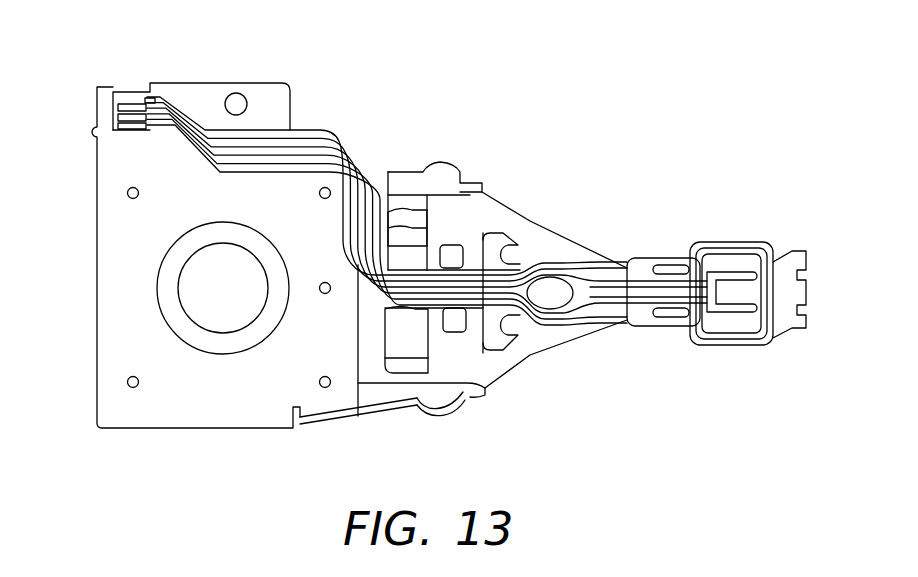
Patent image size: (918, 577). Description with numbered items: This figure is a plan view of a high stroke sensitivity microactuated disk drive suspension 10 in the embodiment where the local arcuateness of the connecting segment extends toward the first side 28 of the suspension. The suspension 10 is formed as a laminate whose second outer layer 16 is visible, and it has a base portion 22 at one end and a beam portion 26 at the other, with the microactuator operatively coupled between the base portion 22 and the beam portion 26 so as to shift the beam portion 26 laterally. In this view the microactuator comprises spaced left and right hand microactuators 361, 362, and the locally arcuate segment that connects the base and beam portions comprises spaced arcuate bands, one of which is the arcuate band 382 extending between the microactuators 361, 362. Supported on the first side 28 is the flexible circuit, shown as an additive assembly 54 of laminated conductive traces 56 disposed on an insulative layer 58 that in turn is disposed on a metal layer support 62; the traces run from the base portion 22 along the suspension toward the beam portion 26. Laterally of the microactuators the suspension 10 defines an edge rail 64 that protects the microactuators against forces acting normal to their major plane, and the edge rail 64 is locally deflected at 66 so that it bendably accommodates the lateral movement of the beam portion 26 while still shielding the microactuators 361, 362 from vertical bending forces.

The microactuated disk drive suspension 10 is at (75, 118).
The second outer layer 16 is at (502, 213).
The base portion 22 is at (197, 420).
The beam portion 26 is at (698, 233).
The first side 28 is at (270, 378).
The additive assembly 54 is at (268, 97).
The conductive traces 56 is at (123, 107).
The insulative layer 58 is at (153, 110).
The metal layer support 62 is at (128, 130).
The edge rail 64 is at (373, 413).
The local deflection of edge rail 66 is at (445, 412).
The left hand microactuator 361 is at (421, 378).
The right hand microactuator 362 is at (423, 235).
The right arcuate band 382 is at (404, 243).